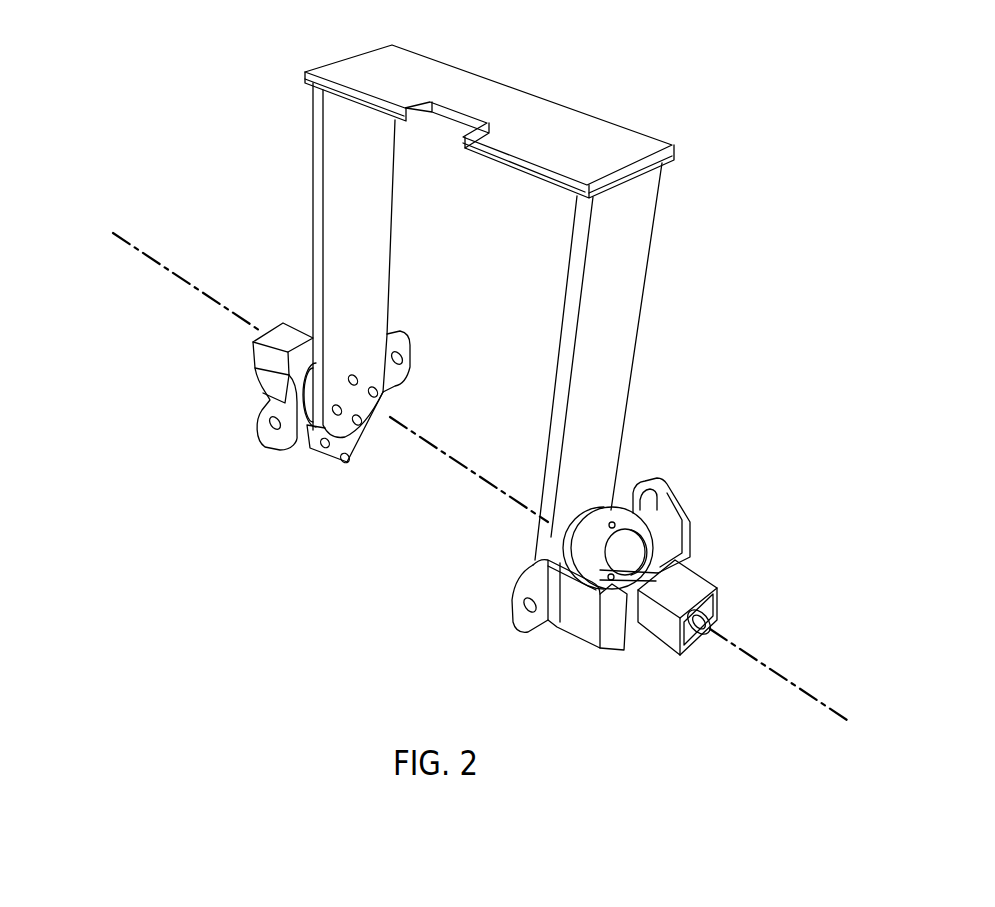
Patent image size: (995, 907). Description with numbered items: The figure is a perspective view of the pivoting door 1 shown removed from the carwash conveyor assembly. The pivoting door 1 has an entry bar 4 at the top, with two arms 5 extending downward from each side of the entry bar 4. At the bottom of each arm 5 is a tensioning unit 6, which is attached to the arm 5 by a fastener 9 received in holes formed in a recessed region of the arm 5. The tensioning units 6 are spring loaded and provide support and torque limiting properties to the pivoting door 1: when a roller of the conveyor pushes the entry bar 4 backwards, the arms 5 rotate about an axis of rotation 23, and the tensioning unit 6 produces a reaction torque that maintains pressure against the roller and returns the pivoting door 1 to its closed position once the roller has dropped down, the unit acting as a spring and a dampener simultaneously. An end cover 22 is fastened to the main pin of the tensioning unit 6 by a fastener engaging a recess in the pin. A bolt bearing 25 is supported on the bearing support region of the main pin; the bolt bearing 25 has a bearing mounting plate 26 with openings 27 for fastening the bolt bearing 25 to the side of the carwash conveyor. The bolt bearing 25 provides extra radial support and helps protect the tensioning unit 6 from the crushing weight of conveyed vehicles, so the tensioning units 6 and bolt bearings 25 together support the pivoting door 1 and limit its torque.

The pivoting door 1 is at (742, 213).
The entry bar 4 is at (540, 124).
The arms 5 is at (350, 233).
The tensioning unit 6 is at (213, 442).
The fastener 9 is at (377, 391).
The end cover 22 is at (710, 608).
The axis of rotation 23 is at (177, 268).
The bolt bearing 25 is at (300, 362).
The bearing mounting plate 26 is at (350, 460).
The openings 27 is at (323, 445).